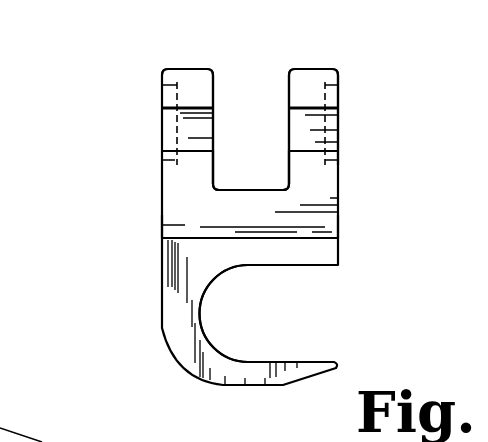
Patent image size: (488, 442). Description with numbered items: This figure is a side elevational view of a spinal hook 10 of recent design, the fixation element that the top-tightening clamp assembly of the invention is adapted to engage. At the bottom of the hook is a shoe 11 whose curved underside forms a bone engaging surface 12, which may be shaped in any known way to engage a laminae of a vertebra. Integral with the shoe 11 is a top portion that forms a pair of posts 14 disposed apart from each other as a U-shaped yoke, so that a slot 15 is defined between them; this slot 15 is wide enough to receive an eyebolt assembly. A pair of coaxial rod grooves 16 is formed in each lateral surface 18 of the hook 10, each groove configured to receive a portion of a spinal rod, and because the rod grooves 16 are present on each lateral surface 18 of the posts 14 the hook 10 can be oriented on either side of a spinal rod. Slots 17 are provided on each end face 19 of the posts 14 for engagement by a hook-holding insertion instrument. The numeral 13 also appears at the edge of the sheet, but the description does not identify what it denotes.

The spinal hook 10 is at (128, 203).
The shoe 11 is at (150, 336).
The bone engaging surface 12 is at (203, 313).
The mounting surface 13 is at (481, 186).
The posts 14 is at (190, 78).
The slot 15 is at (290, 158).
The rod grooves 16 is at (180, 129).
The slots 17 is at (163, 163).
The lateral surface 18 is at (260, 219).
The end face 19 is at (158, 222).